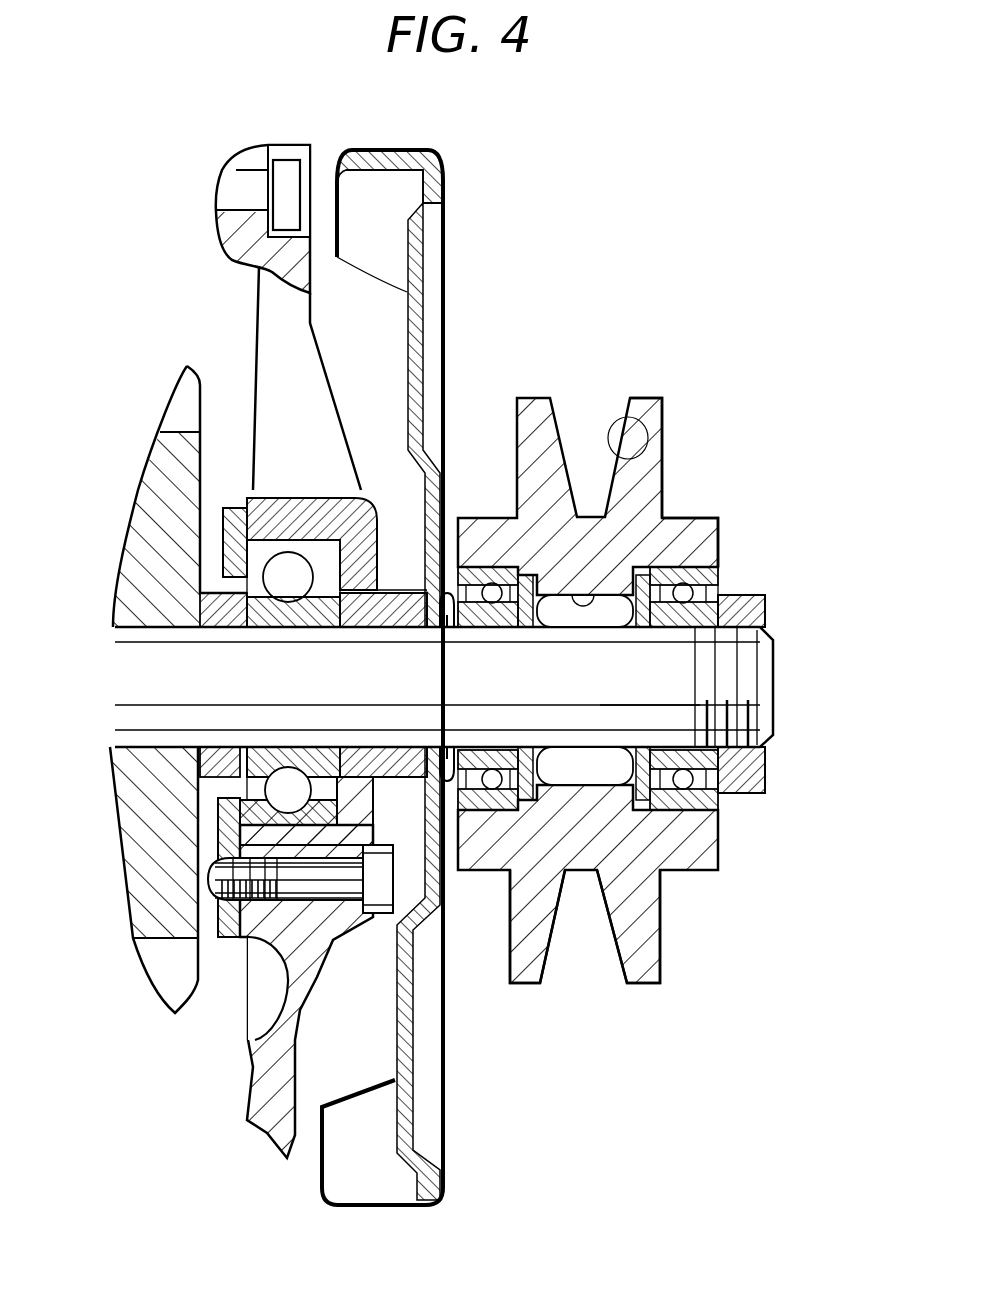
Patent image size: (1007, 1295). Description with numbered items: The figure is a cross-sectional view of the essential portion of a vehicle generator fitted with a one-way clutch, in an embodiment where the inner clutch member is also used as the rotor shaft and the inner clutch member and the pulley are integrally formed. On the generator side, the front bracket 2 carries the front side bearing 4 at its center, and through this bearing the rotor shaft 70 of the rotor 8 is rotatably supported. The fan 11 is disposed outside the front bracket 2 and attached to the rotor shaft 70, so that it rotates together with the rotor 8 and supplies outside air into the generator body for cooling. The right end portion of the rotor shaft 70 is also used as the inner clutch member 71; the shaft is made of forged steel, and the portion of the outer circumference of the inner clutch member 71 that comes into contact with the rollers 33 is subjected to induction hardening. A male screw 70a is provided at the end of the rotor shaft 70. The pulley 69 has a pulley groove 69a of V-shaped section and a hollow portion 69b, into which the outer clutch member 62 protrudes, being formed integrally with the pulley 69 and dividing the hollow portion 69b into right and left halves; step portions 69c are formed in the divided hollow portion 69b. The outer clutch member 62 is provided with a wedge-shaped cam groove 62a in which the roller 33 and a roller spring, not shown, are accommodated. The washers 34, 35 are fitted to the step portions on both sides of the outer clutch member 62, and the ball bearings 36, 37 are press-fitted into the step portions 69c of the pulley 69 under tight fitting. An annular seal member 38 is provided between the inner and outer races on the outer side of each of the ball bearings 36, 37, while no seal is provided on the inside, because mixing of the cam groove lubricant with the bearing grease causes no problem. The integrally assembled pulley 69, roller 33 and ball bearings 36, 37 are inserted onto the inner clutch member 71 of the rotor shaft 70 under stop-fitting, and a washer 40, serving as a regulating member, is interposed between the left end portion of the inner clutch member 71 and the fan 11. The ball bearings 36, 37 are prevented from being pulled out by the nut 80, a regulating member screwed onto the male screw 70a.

The front bracket 2 is at (253, 1082).
The front side bearing 4 is at (252, 983).
The rotor 8 is at (130, 522).
The fan 11 is at (442, 1153).
The roller 33 is at (690, 542).
The washer 34 is at (523, 810).
The washer 35 is at (637, 800).
The ball bearing 36 is at (492, 805).
The ball bearing 37 is at (688, 807).
The annular seal member 38 is at (720, 790).
The washer 40 is at (445, 630).
The outer clutch member 62 is at (610, 608).
The wedge-shaped cam groove 62a is at (612, 603).
The pulley 69 is at (647, 398).
The pulley groove 69a is at (592, 553).
The hollow portion 69b is at (507, 567).
The step portions 69c is at (700, 600).
The rotor shaft 70 is at (127, 683).
The male screw 70a is at (748, 664).
The inner clutch member 71 is at (657, 687).
The nut 80 is at (770, 609).